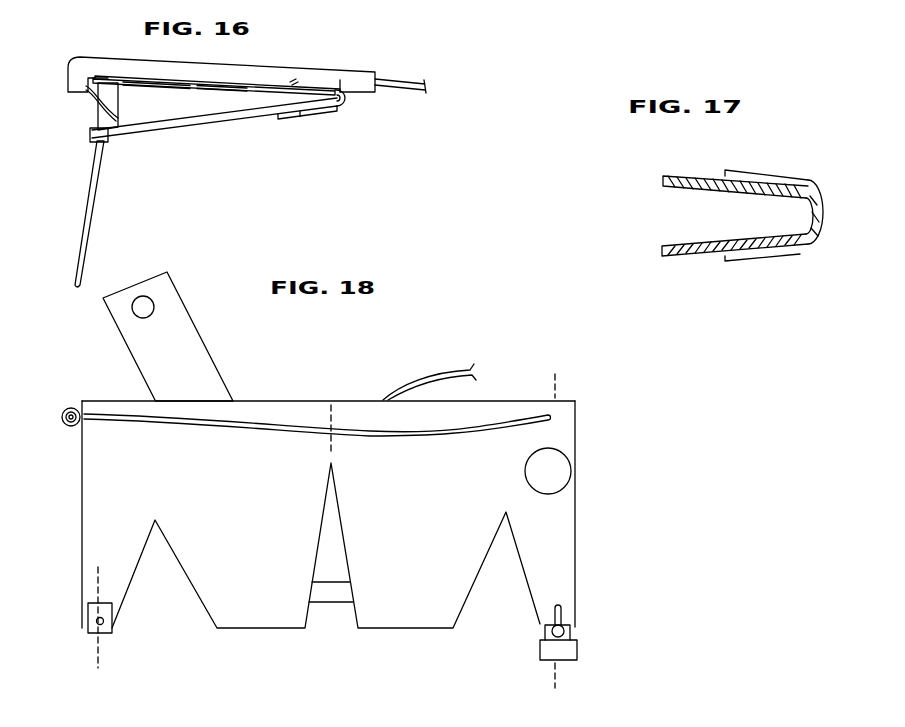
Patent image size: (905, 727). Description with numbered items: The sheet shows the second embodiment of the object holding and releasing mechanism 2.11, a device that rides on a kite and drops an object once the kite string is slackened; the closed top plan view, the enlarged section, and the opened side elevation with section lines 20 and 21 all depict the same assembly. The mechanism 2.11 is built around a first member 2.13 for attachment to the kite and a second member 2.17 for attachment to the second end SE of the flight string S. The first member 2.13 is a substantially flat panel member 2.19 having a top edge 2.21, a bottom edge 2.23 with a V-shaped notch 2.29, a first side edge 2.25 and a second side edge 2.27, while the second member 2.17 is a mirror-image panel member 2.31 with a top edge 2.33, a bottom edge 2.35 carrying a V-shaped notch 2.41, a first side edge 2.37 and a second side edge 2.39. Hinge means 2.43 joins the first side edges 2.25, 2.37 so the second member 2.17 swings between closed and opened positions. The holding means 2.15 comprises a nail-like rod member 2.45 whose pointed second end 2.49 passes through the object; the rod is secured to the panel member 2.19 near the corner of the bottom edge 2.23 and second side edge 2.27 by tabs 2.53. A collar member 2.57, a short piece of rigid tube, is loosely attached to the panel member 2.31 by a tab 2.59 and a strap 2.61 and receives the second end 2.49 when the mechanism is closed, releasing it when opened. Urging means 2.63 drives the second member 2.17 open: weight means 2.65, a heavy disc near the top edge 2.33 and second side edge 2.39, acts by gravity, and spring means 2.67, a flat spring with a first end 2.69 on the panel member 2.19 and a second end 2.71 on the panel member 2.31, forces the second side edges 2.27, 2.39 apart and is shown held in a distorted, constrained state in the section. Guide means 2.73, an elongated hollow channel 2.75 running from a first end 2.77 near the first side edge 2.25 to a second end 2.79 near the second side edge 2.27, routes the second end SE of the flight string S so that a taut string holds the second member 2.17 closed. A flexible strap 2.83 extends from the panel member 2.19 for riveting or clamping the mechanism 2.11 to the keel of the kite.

In FIG. 16, the object holding and releasing mechanism 2.11 is at (309, 29).
In FIG. 18, the object holding and releasing mechanism 2.11 is at (408, 313).
In FIG. 16, the first member 2.13 is at (338, 56).
In FIG. 17, the first member 2.13 is at (697, 169).
In FIG. 18, the first member 2.13 is at (82, 488).
In FIG. 16, the holding means 2.15 is at (80, 201).
In FIG. 18, the holding means 2.15 is at (79, 629).
In FIG. 16, the second member 2.17 is at (187, 132).
In FIG. 17, the second member 2.17 is at (702, 257).
In FIG. 18, the second member 2.17 is at (581, 536).
In FIG. 16, the panel member 2.19 is at (279, 82).
In FIG. 17, the panel member 2.19 is at (670, 173).
In FIG. 18, the panel member 2.19 is at (97, 527).
In FIG. 18, the top edge 2.21 is at (308, 400).
In FIG. 18, the bottom edge 2.23 is at (240, 630).
In FIG. 17, the first side edge 2.25 is at (845, 160).
In FIG. 18, the first side edge 2.25 is at (308, 618).
In FIG. 18, the second side edge 2.27 is at (82, 453).
In FIG. 18, the V-shaped notch 2.29 is at (147, 609).
In FIG. 17, the panel member 2.31 is at (676, 254).
In FIG. 18, the panel member 2.31 is at (630, 581).
In FIG. 18, the top edge 2.33 is at (485, 401).
In FIG. 18, the bottom edge 2.35 is at (437, 630).
In FIG. 17, the first side edge 2.37 is at (830, 245).
In FIG. 18, the first side edge 2.37 is at (356, 628).
In FIG. 18, the second side edge 2.39 is at (577, 584).
In FIG. 18, the V-shaped notch 2.41 is at (477, 608).
In FIG. 16, the hinge means 2.43 is at (348, 97).
In FIG. 18, the hinge means 2.43 is at (380, 370).
In FIG. 16, the rod member 2.45 is at (155, 233).
In FIG. 18, the rod member 2.45 is at (104, 624).
In FIG. 16, the second end 2.49 is at (77, 280).
In FIG. 18, the tabs 2.53 is at (90, 606).
In FIG. 16, the collar member 2.57 is at (106, 1).
In FIG. 18, the collar member 2.57 is at (637, 668).
In FIG. 18, the tab 2.59 is at (540, 642).
In FIG. 18, the strap 2.61 is at (548, 612).
In FIG. 16, the urging means 2.63 is at (359, 118).
In FIG. 17, the urging means 2.63 is at (786, 164).
In FIG. 18, the urging means 2.63 is at (583, 463).
In FIG. 16, the weight means 2.65 is at (92, 131).
In FIG. 18, the weight means 2.65 is at (570, 482).
In FIG. 16, the spring means 2.67 is at (362, 160).
In FIG. 17, the spring means 2.67 is at (798, 253).
In FIG. 18, the spring means 2.67 is at (334, 597).
In FIG. 17, the first end 2.69 is at (770, 178).
In FIG. 16, the second end 2.71 is at (287, 119).
In FIG. 17, the second end 2.71 is at (756, 257).
In FIG. 16, the guide means 2.73 is at (155, 56).
In FIG. 16, the channel 2.75 is at (78, 66).
In FIG. 18, the channel 2.75 is at (80, 405).
In FIG. 16, the first end 2.77 is at (362, 73).
In FIG. 16, the second end 2.79 is at (72, 91).
In FIG. 18, the flexible strap 2.83 is at (195, 345).
In FIG. 16, the flight string S is at (440, 72).
In FIG. 18, the flight string S is at (458, 370).
In FIG. 16, the second end SE is at (96, 126).
In FIG. 18, the second end SE is at (556, 420).
In FIG. 18, the section line 20- 20 is at (98, 567).
In FIG. 18, the section line 21- 21 is at (555, 372).